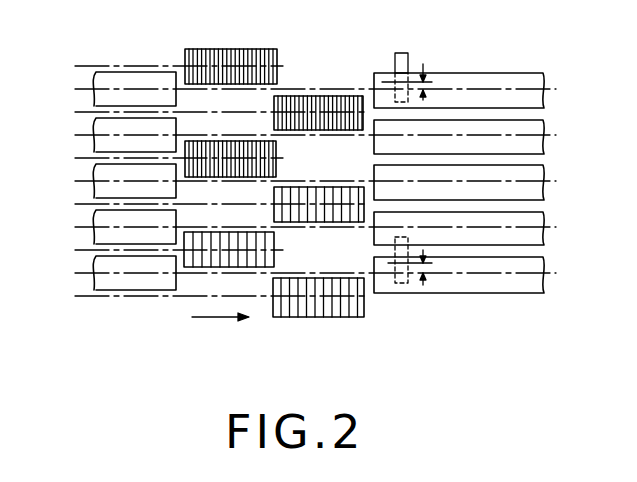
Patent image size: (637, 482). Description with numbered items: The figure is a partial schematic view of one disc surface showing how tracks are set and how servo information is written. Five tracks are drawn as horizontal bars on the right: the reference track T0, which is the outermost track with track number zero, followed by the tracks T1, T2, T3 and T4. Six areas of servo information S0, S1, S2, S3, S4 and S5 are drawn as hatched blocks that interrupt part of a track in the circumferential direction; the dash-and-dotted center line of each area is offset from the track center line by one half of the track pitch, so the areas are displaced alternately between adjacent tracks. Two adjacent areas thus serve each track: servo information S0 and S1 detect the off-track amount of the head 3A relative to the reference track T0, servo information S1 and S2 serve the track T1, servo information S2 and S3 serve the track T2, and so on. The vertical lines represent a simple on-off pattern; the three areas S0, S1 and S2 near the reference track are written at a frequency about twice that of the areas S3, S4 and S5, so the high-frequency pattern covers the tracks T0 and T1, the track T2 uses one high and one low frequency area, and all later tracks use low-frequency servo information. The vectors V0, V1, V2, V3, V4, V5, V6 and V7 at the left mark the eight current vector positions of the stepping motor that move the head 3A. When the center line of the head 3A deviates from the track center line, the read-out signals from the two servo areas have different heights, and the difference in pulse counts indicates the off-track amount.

The servo information S0 is at (205, 57).
The servo information S1 is at (313, 100).
The servo information S2 is at (203, 146).
The servo information S3 is at (303, 191).
The servo information S4 is at (205, 240).
The servo information S5 is at (303, 283).
The reference track T0 is at (510, 78).
The track T1 is at (546, 127).
The track T2 is at (543, 177).
The track T3 is at (545, 224).
The track T4 is at (545, 268).
The head 3A is at (399, 54).
The vector V0 is at (150, 158).
The vector V1 is at (286, 181).
The vector V2 is at (192, 204).
The vector V3 is at (286, 135).
The vector V4 is at (150, 158).
The vector V5 is at (286, 181).
The vector V6 is at (192, 204).
The vector V7 is at (286, 227).